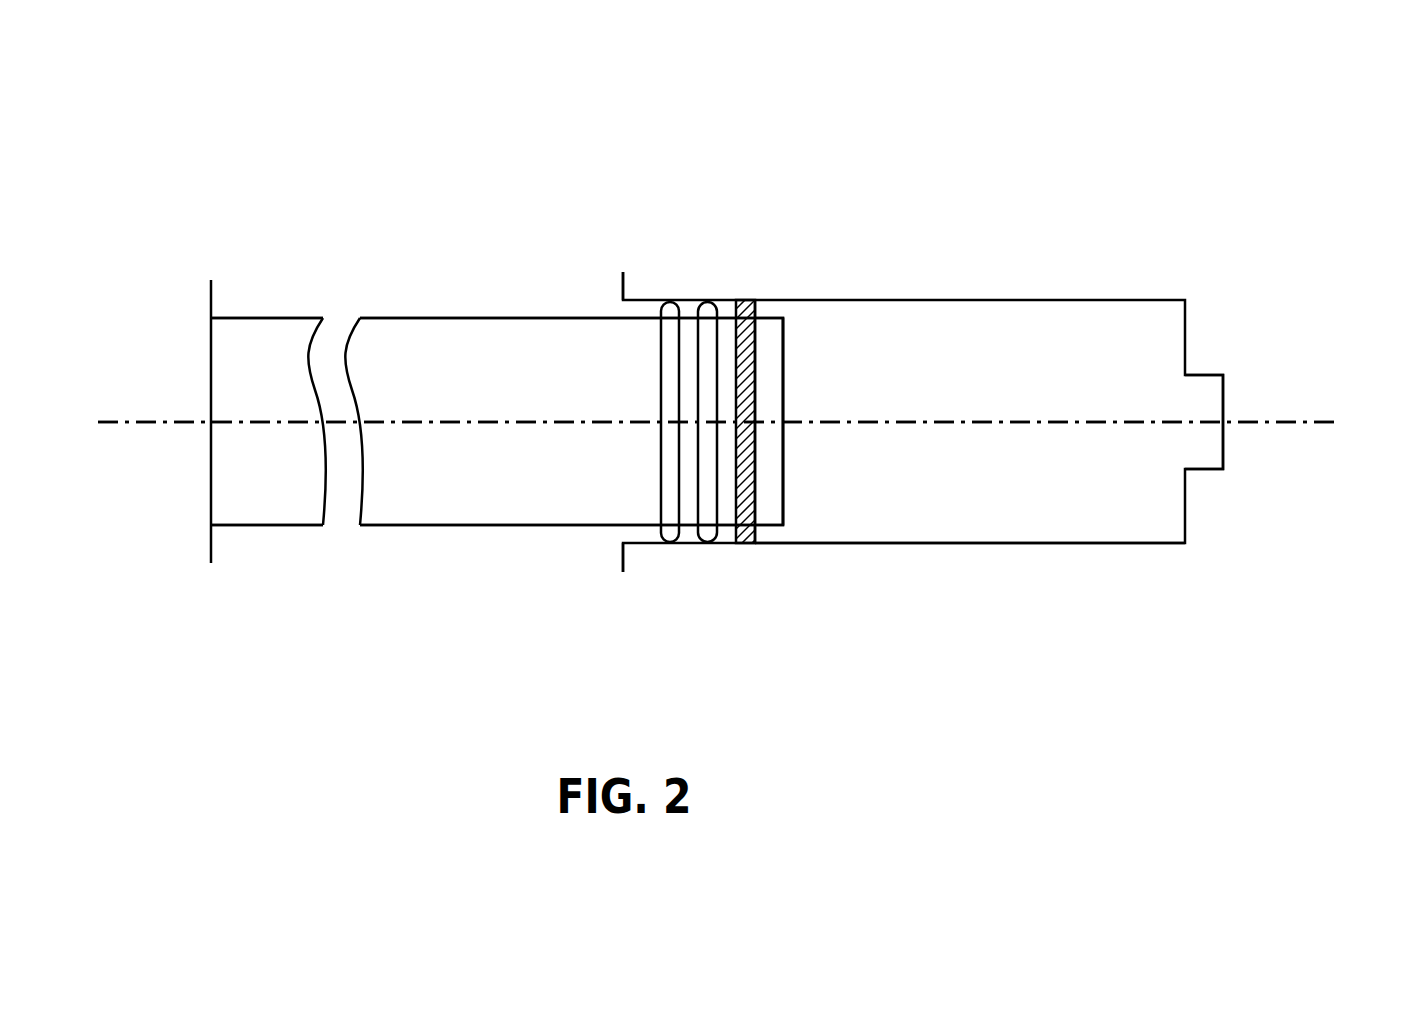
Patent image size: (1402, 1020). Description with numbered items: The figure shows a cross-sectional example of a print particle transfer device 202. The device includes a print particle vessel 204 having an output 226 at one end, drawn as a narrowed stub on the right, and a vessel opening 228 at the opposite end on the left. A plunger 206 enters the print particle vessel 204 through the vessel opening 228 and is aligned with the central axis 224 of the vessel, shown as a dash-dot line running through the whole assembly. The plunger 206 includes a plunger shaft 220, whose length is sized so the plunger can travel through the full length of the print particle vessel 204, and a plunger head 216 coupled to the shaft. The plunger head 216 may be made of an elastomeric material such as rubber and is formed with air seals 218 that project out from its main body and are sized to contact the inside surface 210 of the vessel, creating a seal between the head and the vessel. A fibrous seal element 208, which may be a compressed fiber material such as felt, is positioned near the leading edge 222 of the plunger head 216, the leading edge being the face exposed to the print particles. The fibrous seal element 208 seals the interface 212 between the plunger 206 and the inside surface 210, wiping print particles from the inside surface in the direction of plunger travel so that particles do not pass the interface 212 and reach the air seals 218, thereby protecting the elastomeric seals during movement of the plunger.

The print particle transfer device 202 is at (212, 153).
The print particle vessel 204 is at (1075, 298).
The plunger 206 is at (403, 264).
The fibrous seal element 208 is at (747, 300).
The inside surface 210 is at (962, 542).
The interface 212 is at (757, 543).
The plunger head 216 is at (688, 527).
The air seal 218 is at (707, 300).
The plunger shaft 220 is at (415, 527).
The leading edge 222 is at (784, 347).
The central axis 224 is at (1275, 424).
The output 226 is at (1224, 395).
The vessel opening 228 is at (622, 534).